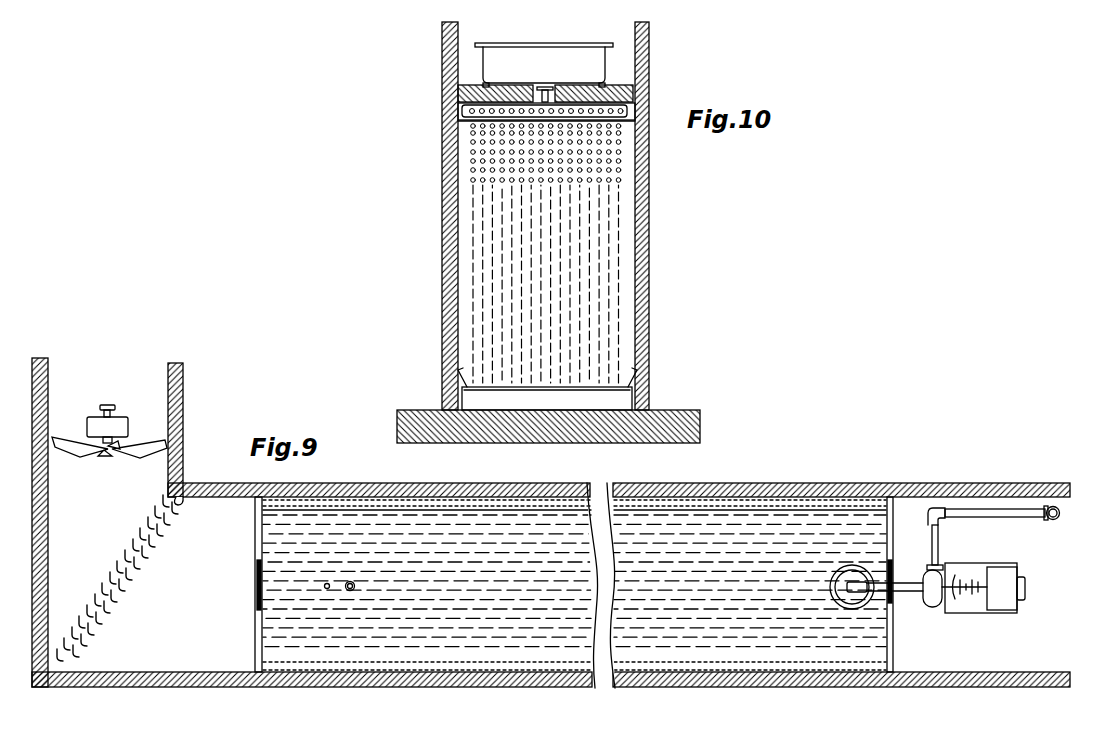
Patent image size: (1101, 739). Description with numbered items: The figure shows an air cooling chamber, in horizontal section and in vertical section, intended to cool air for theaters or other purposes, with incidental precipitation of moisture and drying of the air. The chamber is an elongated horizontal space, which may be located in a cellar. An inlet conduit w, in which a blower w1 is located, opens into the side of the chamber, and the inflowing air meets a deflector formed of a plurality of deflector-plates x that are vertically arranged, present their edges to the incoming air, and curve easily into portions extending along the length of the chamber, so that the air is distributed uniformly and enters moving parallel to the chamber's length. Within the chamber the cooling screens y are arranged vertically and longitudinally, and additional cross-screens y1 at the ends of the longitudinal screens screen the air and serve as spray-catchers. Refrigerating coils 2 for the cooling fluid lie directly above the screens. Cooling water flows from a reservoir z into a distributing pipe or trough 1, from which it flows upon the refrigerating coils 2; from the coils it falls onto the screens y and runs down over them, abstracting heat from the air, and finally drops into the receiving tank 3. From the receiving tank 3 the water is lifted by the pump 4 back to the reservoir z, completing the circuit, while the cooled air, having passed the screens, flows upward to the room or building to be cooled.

In FIG. 10, the reservoir z is at (563, 48).
In FIG. 10, the distributing pipe or trough 1 is at (620, 125).
In FIG. 10, the refrigerating coils 2 is at (620, 142).
In FIG. 10, the cooling screens y is at (620, 242).
In FIG. 9, the cooling screens y is at (500, 647).
In FIG. 10, the receiving tank 3 is at (610, 395).
In FIG. 9, the receiving tank 3 is at (295, 653).
In FIG. 9, the inlet conduit w is at (551, 519).
In FIG. 9, the blower w1 is at (153, 443).
In FIG. 9, the deflector-plates x is at (117, 578).
In FIG. 9, the cross-screens y1 is at (258, 573).
In FIG. 9, the pump 4 is at (935, 607).